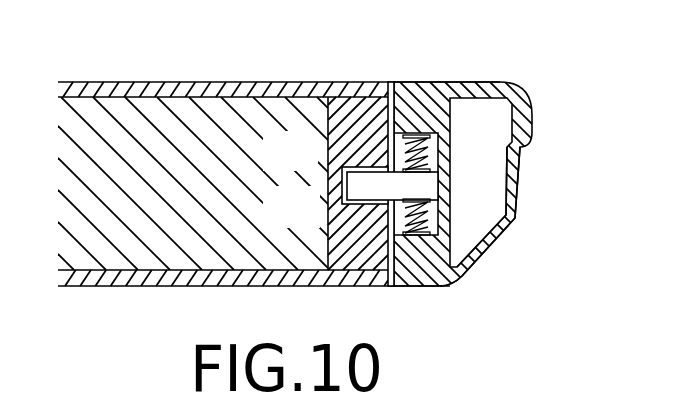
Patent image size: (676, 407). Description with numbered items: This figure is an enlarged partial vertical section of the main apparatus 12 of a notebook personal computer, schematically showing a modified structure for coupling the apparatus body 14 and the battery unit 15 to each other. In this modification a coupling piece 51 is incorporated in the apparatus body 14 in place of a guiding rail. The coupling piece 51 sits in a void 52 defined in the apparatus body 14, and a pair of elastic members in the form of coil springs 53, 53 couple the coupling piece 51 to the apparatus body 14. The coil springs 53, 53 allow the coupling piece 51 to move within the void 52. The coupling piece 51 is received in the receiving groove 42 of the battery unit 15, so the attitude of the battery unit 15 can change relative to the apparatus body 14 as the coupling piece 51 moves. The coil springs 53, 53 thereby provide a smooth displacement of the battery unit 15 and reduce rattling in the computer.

The battery unit 15 is at (298, 82).
The main apparatus 12 is at (503, 82).
The apparatus body 14 is at (515, 219).
The coupling piece 51 is at (342, 178).
The receiving groove 42 is at (342, 185).
The void 52 is at (397, 228).
The coil spring 53 is at (416, 152).